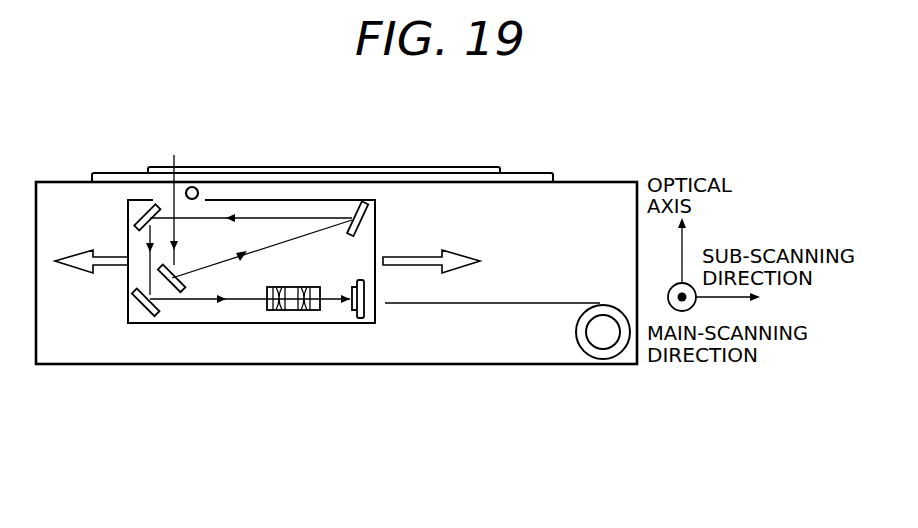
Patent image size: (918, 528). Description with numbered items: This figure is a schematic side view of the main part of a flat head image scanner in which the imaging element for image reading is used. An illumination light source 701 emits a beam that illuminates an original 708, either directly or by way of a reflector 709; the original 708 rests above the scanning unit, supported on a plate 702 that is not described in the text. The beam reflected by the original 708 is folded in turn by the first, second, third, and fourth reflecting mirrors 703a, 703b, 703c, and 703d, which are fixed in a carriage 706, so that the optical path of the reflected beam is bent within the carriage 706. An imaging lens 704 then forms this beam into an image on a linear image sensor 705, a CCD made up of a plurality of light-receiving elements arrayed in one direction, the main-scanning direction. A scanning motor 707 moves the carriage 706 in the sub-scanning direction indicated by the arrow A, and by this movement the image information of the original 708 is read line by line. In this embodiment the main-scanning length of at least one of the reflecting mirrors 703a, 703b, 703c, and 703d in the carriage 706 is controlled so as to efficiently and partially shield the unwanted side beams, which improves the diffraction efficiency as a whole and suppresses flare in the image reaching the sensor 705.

The illumination light source 701 is at (193, 187).
The base plate 702 is at (533, 175).
The first reflecting mirror 703a is at (173, 292).
The second reflecting mirror 703b is at (365, 200).
The third reflecting mirror 703c is at (145, 201).
The fourth reflecting mirror 703d is at (142, 314).
The imaging lens 704 is at (284, 312).
The linear image sensor 705 is at (362, 318).
The carriage 706 is at (320, 324).
The scanning motor 707 is at (583, 350).
The original 708 is at (446, 167).
The reflector 709 is at (208, 199).
The arrow A is at (453, 252).